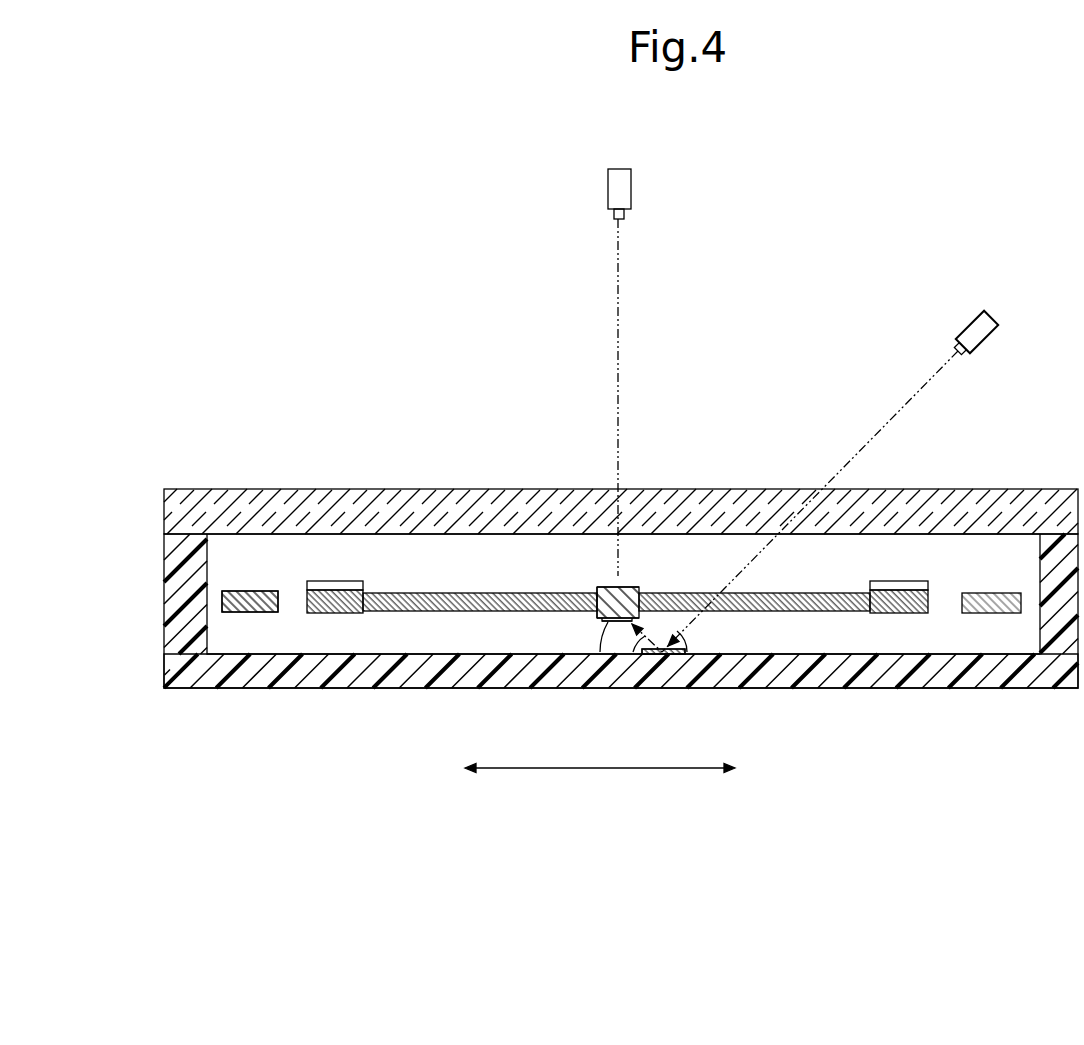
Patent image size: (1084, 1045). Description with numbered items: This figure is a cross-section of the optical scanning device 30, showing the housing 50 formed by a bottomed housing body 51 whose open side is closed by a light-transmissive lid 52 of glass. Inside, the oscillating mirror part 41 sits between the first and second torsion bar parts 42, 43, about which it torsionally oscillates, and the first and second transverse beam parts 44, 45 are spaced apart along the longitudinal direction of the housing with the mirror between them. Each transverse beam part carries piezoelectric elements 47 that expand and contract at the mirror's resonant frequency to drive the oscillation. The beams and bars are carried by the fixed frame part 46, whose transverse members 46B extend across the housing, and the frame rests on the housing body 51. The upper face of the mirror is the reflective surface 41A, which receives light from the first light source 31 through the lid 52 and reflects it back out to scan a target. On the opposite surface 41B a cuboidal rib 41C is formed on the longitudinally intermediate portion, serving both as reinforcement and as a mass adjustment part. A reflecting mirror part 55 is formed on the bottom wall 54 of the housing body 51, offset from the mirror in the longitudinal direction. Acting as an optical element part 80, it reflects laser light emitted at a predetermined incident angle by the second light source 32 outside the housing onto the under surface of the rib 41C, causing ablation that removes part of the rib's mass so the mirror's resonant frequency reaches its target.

The optical scanning device 30 is at (323, 390).
The first light source 31 is at (631, 187).
The second light source 32 is at (965, 323).
The oscillating mirror part 41 is at (597, 587).
The reflective surface 41A is at (618, 586).
The opposite surface 41B is at (601, 622).
The rib 41C is at (608, 657).
The first torsion bar part 42 is at (457, 594).
The second torsion bar part 43 is at (804, 594).
The first transverse beam part 44 is at (340, 613).
The second transverse beam part 45 is at (880, 613).
The fixed frame part 46 is at (256, 591).
The transverse members 46B is at (261, 606).
The piezoelectric elements 47 is at (323, 584).
The housing 50 is at (202, 428).
The housing body 51 is at (175, 570).
The lid 52 is at (186, 492).
The bottom wall 54 is at (852, 688).
The reflecting mirror part 55 is at (683, 656).
The optical element part 80 is at (663, 651).